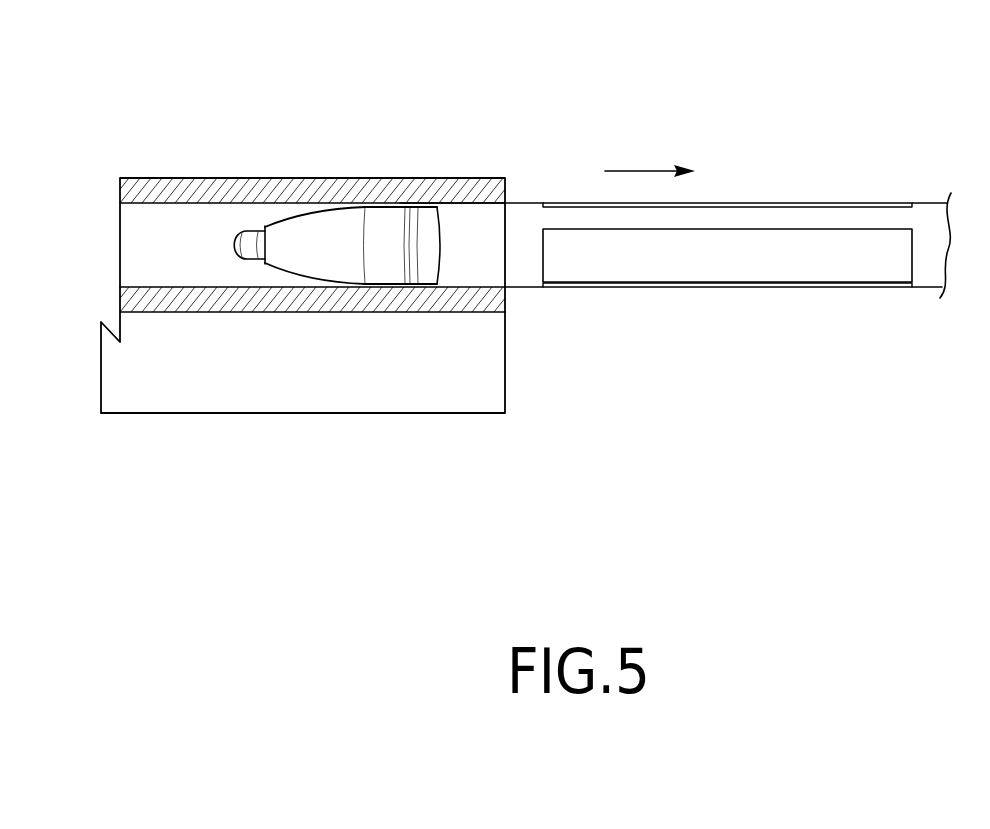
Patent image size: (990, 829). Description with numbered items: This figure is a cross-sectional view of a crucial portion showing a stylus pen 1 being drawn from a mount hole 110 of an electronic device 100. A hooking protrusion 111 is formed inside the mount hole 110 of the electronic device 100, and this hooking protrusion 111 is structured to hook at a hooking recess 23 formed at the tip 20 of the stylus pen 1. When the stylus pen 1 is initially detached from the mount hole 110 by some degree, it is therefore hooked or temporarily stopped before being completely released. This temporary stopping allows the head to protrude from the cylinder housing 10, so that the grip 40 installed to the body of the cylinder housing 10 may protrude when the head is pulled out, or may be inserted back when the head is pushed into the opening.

The stylus pen 1 is at (747, 158).
The cylinder housing 10 is at (728, 257).
The tip 20 is at (339, 348).
The hooking recess 23 is at (422, 262).
The grip 40 is at (732, 271).
The electronic device 100 is at (303, 229).
The mount hole 110 is at (174, 229).
The hooking protrusion 111 is at (418, 203).